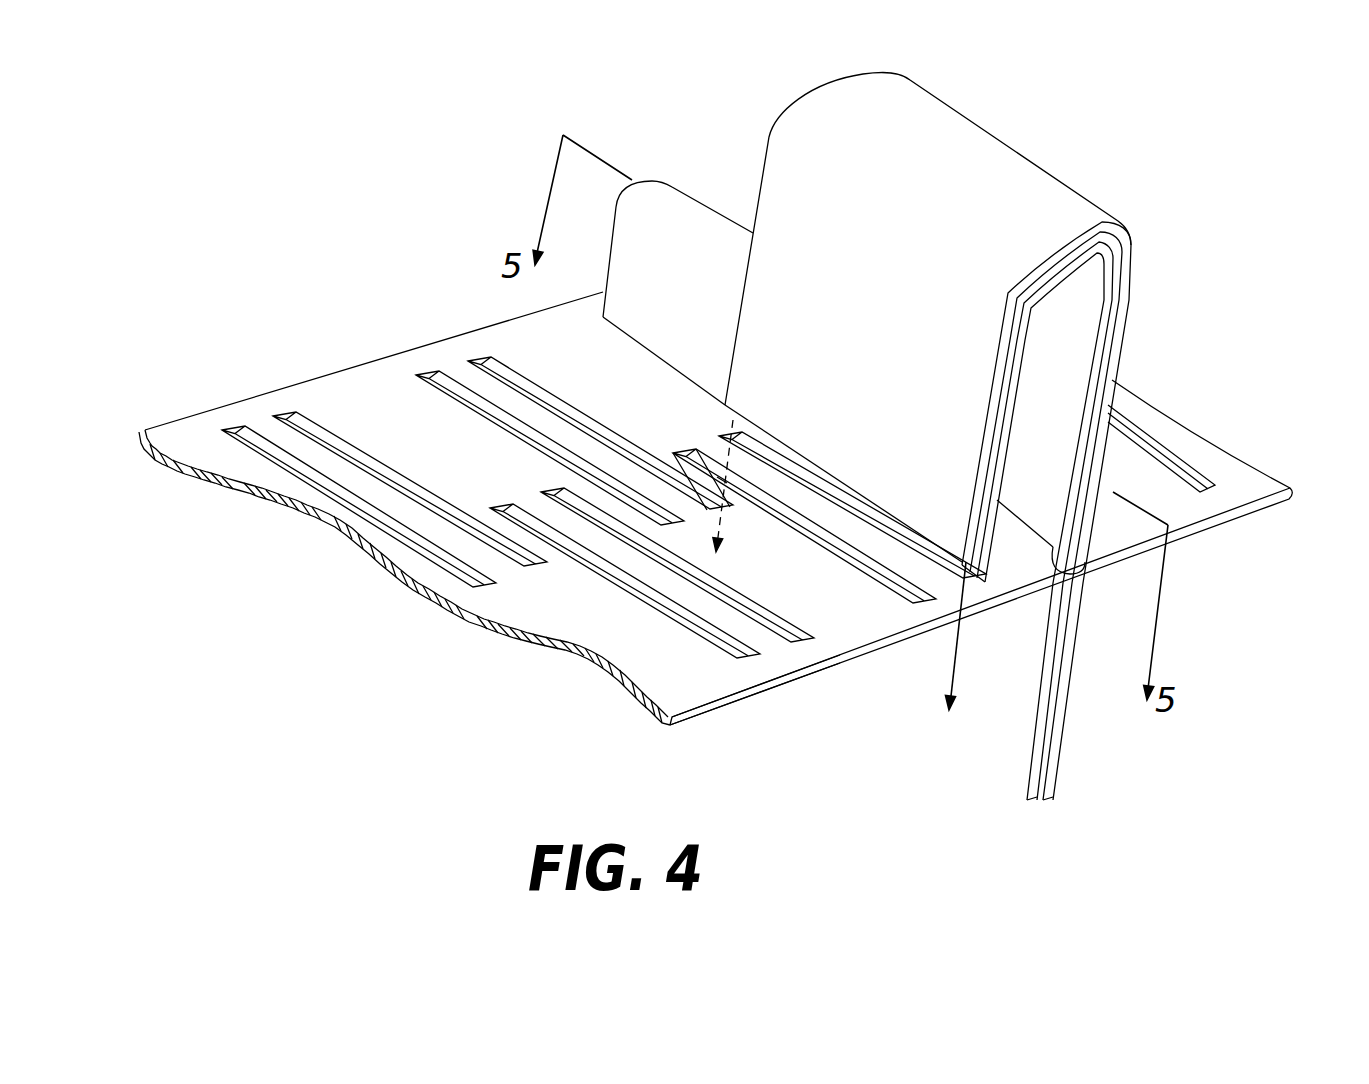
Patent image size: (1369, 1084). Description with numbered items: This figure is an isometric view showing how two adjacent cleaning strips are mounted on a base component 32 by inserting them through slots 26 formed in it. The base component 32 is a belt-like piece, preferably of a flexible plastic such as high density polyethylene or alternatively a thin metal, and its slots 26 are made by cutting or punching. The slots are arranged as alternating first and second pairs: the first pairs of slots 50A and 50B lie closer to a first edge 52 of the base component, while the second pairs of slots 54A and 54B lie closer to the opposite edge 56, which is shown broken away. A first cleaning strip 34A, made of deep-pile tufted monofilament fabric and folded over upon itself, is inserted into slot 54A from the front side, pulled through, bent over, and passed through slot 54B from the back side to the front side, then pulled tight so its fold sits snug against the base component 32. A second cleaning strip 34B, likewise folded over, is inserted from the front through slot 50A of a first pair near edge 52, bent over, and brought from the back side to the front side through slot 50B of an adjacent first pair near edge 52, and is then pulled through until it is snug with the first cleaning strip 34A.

The slot 26 is at (792, 530).
The base component 32 is at (1240, 498).
The first cleaning strip 34A is at (663, 192).
The second cleaning strip 34B is at (1125, 285).
The slot of first pair 50A is at (743, 660).
The slot of first pair 50B is at (797, 643).
The first edge 52 is at (687, 718).
The slot of second pair 54A is at (228, 427).
The slot of second pair 54B is at (280, 413).
The opposite edge 56 is at (150, 428).